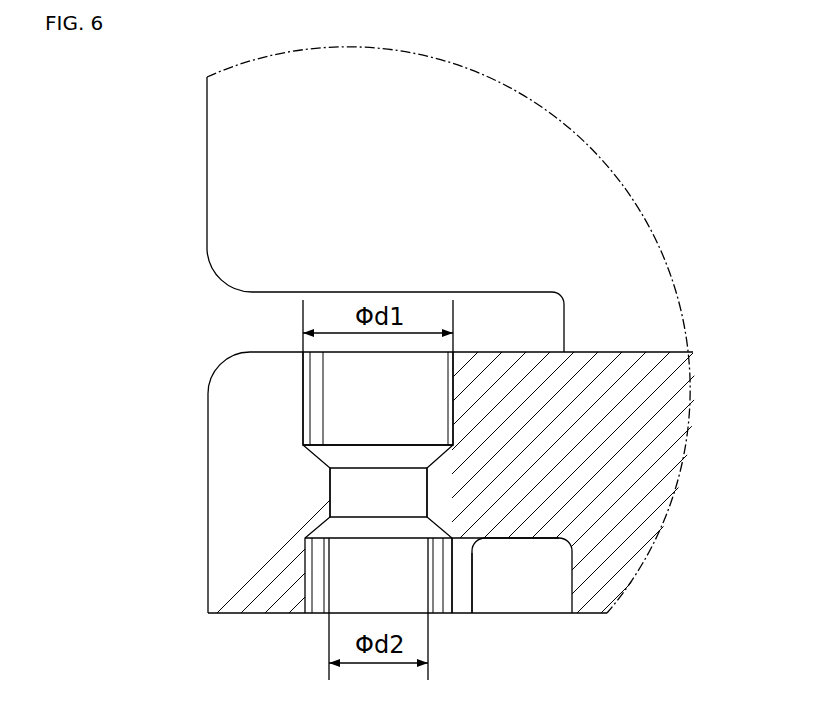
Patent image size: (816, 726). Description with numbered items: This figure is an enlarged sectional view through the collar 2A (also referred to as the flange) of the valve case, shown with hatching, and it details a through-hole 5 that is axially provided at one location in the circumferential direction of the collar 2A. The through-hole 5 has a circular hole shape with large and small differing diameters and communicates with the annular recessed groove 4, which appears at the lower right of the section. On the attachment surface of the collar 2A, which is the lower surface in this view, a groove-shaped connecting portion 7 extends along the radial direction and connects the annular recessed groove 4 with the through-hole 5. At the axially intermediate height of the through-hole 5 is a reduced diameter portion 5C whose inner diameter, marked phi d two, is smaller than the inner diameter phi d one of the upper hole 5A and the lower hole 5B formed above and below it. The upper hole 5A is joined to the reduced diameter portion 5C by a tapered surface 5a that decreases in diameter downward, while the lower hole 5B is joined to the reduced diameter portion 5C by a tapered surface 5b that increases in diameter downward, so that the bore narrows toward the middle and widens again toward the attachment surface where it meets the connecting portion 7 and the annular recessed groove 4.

The collar 2A is at (626, 352).
The annular recessed groove 4 is at (572, 555).
The through-hole 5 is at (413, 592).
The upper hole 5A is at (457, 362).
The tapered surface 5a is at (333, 455).
The lower hole 5B is at (322, 618).
The tapered surface 5b is at (316, 532).
The reduced diameter portion 5C is at (325, 497).
The connecting portion 7 is at (463, 578).